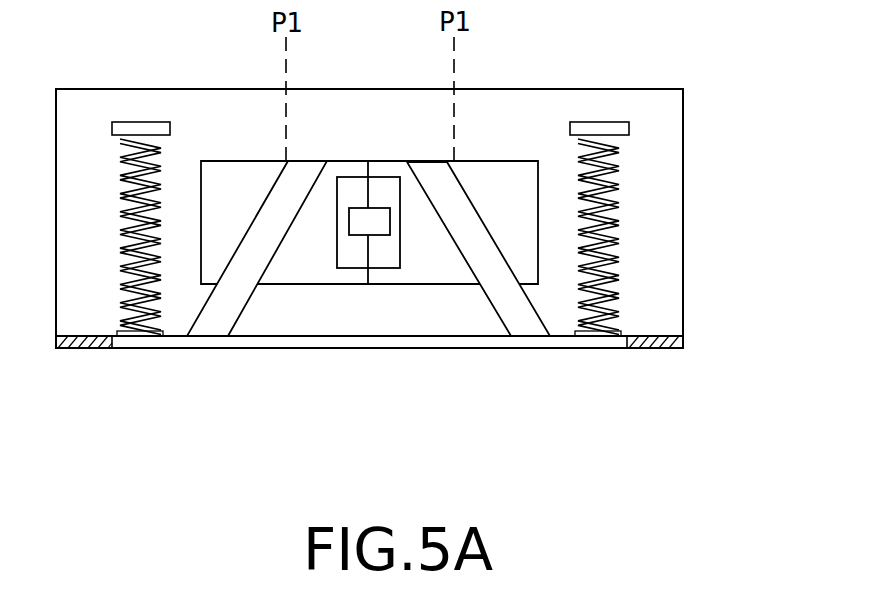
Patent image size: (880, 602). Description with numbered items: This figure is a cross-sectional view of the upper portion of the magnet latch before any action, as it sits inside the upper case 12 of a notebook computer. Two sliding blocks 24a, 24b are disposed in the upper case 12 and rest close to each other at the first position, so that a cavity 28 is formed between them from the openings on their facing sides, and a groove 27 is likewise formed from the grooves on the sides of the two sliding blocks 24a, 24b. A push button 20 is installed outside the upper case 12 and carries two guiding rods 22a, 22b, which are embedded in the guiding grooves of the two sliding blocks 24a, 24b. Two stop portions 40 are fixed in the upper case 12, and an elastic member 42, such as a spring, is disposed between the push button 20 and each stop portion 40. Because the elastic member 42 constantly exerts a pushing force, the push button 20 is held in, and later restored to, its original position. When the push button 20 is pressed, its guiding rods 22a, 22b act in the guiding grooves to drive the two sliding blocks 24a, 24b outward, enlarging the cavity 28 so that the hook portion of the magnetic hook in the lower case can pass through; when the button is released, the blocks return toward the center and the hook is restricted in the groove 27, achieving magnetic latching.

The upper case 12 is at (683, 297).
The push button 20 is at (353, 343).
The guiding rod 22a is at (517, 313).
The guiding rod 22b is at (223, 313).
The sliding block 24a is at (427, 268).
The sliding block 24b is at (301, 265).
The groove 27 is at (358, 187).
The cavity 28 is at (378, 222).
The stop portion 40 is at (612, 127).
The elastic member 42 is at (620, 235).